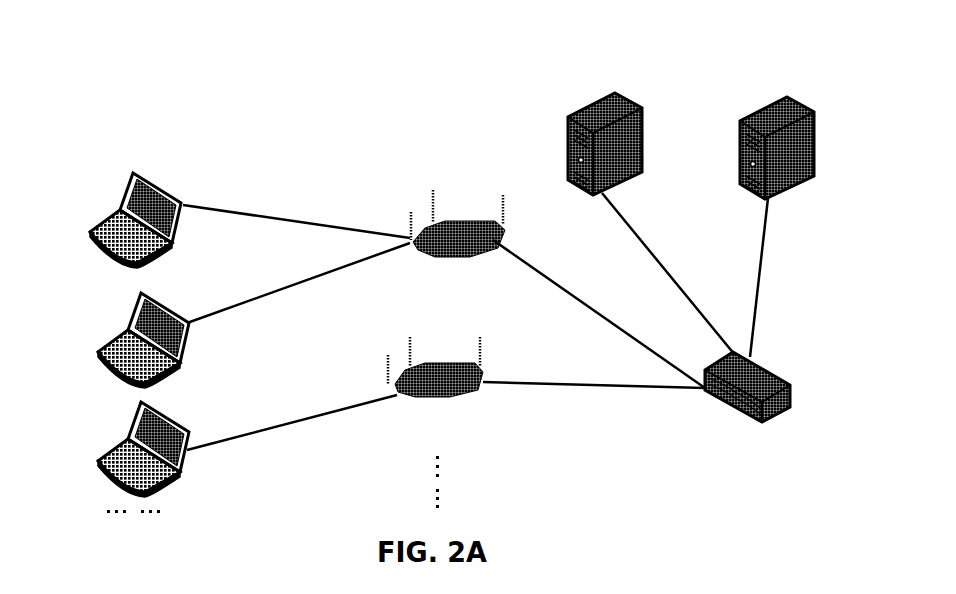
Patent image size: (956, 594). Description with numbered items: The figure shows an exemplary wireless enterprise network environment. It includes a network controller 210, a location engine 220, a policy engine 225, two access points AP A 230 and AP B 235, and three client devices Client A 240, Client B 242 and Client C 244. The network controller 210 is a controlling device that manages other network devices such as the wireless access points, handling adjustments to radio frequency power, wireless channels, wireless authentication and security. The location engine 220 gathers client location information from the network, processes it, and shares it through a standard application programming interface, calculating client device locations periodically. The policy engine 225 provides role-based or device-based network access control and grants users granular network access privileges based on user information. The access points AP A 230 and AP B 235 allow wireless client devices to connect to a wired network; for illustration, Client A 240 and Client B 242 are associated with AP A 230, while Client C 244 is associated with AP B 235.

The network controller 210 is at (680, 468).
The location engine 220 is at (540, 160).
The policy engine 225 is at (725, 150).
The access point A 230 is at (472, 310).
The access point B 235 is at (457, 442).
The client A 240 is at (88, 210).
The client B 242 is at (73, 356).
The client C 244 is at (87, 450).